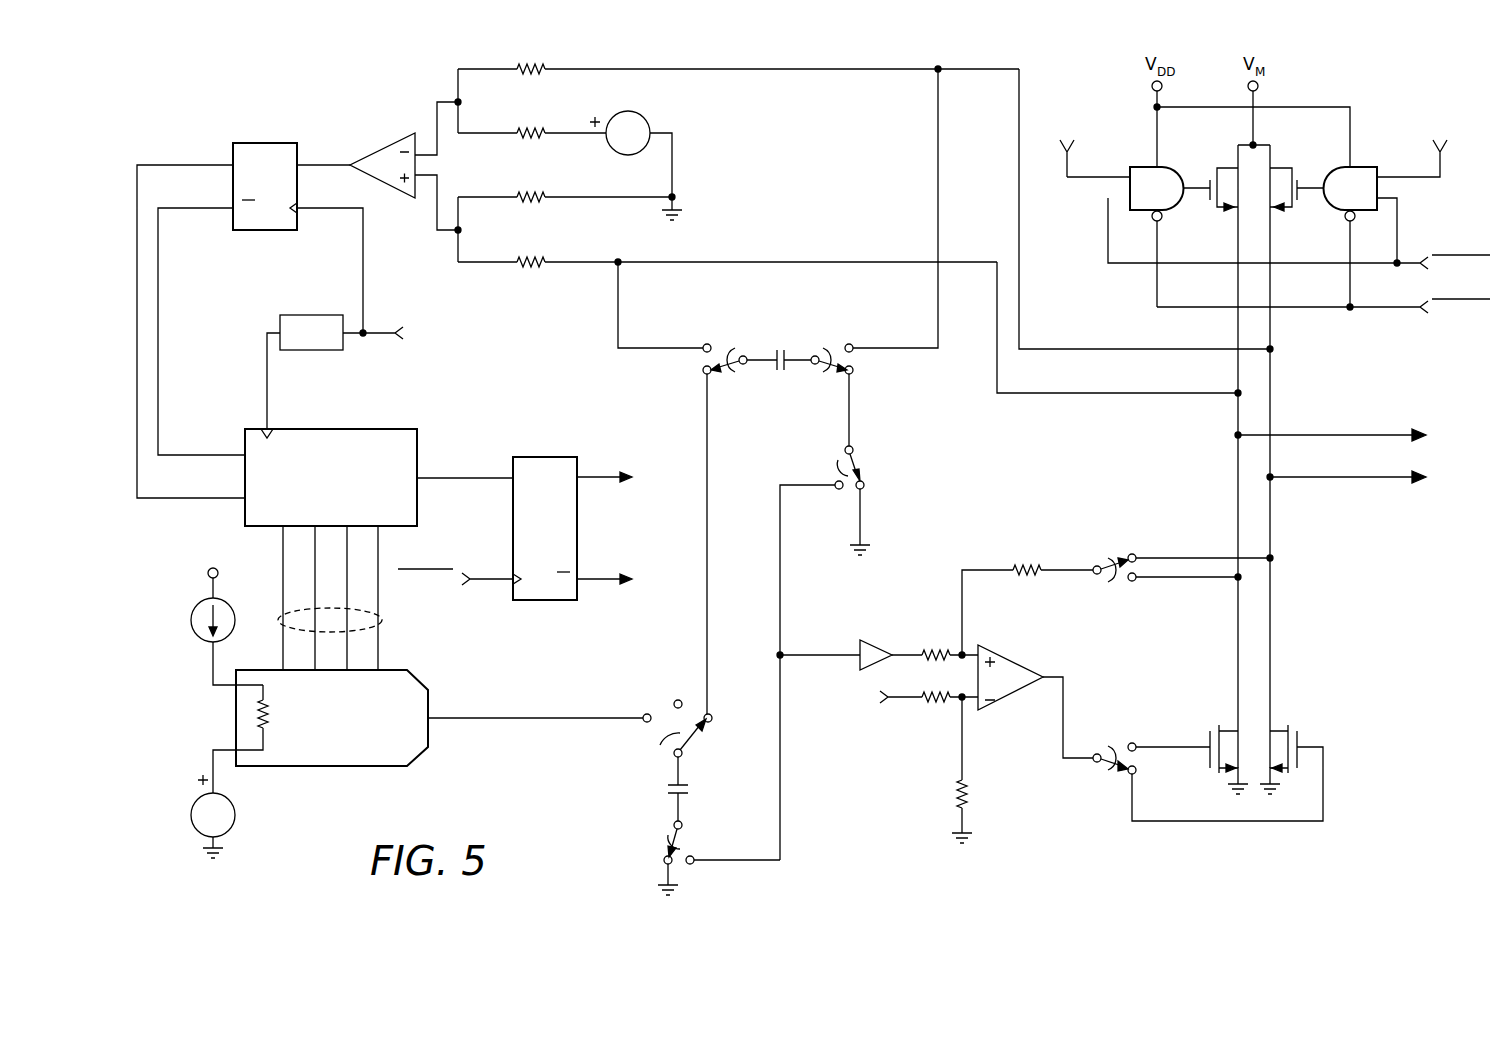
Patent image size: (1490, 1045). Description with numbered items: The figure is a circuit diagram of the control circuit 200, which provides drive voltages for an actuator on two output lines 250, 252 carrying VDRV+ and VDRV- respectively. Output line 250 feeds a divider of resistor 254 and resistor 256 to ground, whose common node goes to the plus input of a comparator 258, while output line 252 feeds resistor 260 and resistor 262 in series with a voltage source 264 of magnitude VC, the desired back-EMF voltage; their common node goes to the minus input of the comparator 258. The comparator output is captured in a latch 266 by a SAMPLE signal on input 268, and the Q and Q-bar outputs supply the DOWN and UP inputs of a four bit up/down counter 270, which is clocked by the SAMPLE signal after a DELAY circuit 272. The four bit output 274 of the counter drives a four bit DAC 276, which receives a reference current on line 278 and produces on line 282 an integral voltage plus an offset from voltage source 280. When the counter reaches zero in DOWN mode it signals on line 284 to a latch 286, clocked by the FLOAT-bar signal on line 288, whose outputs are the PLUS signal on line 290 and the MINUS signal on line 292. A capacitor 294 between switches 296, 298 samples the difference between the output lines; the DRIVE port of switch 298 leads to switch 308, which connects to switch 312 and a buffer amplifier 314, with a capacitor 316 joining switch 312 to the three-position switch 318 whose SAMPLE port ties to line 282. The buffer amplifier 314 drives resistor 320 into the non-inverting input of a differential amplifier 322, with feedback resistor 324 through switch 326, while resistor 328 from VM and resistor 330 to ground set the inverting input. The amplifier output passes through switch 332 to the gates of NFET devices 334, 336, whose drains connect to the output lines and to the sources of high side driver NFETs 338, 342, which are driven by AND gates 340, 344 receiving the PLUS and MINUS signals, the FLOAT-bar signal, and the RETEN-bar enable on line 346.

The control circuit 200 is at (829, 178).
The output line 250 is at (1363, 426).
The output line 252 is at (1363, 481).
The resistor 254 is at (522, 276).
The resistor 256 is at (522, 211).
The comparator 258 is at (380, 137).
The resistor 260 is at (522, 83).
The resistor 262 is at (522, 147).
The voltage source 264 is at (614, 153).
The latch 266 is at (268, 143).
The SAMPLE input 268 is at (377, 330).
The four bit up/down counter 270 is at (328, 429).
The DELAY circuit 272 is at (307, 315).
The four bit output 274 is at (382, 624).
The four bit digital-to-analog converter 276 is at (390, 766).
The reference current line 278 is at (205, 670).
The voltage source 280 is at (192, 820).
The DAC output line 282 is at (496, 722).
The output signal line 284 is at (471, 481).
The latch 286 is at (543, 455).
The FLOAT-bar signal line 288 is at (486, 583).
The PLUS signal line 290 is at (595, 581).
The MINUS signal line 292 is at (595, 481).
The capacitor 294 is at (776, 342).
The switch 296 is at (700, 368).
The switch 298 is at (856, 368).
The switch 308 is at (870, 458).
The switch 312 is at (693, 869).
The buffer amplifier 314 is at (868, 638).
The capacitor 316 is at (690, 790).
The switch 318 is at (700, 744).
The resistor 320 is at (926, 645).
The differential amplifier 322 is at (1012, 700).
The resistor 324 is at (1022, 573).
The switch 326 is at (1116, 582).
The resistor 328 is at (934, 702).
The resistor 330 is at (958, 794).
The switch 332 is at (1094, 771).
The NFET device 334 is at (1225, 728).
The NFET device 336 is at (1287, 728).
The large current NFET 338 is at (1215, 166).
The AND gate 340 is at (1136, 166).
The high current NFET 342 is at (1287, 166).
The AND gate 344 is at (1370, 166).
The RETEN-bar line 346 is at (1310, 310).